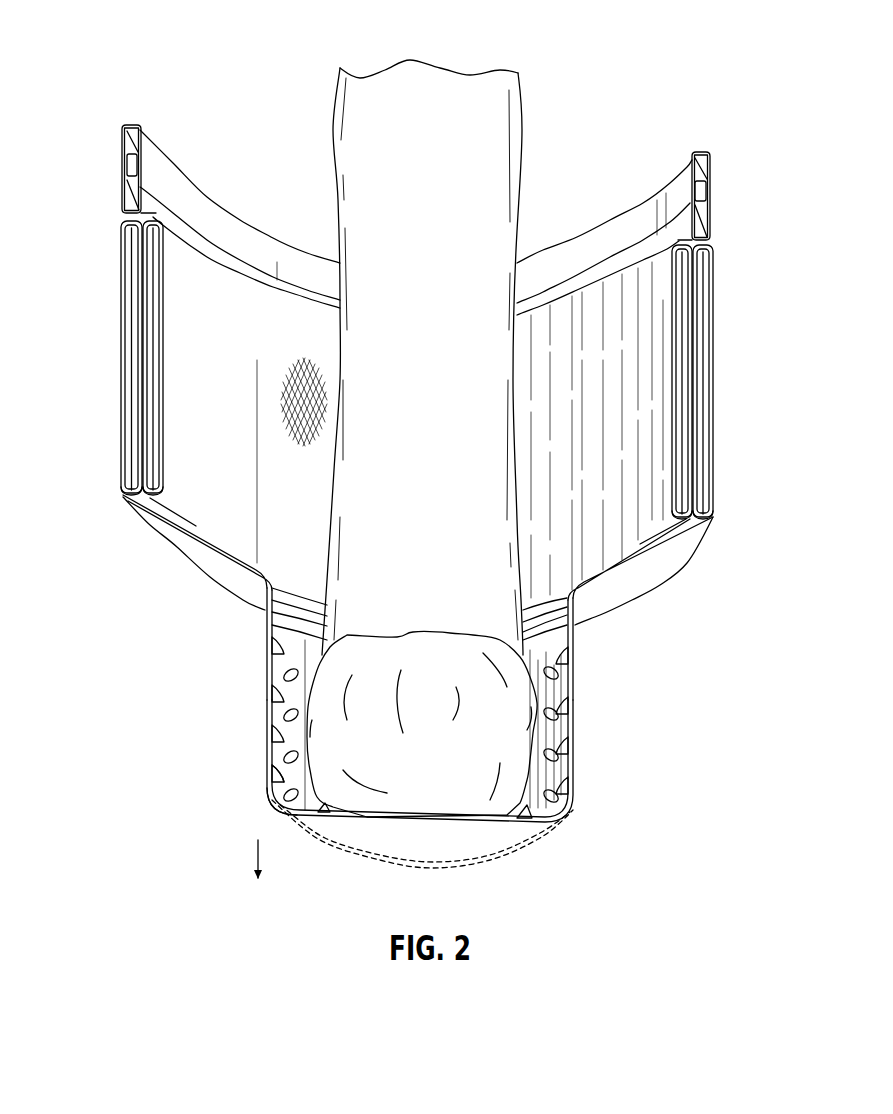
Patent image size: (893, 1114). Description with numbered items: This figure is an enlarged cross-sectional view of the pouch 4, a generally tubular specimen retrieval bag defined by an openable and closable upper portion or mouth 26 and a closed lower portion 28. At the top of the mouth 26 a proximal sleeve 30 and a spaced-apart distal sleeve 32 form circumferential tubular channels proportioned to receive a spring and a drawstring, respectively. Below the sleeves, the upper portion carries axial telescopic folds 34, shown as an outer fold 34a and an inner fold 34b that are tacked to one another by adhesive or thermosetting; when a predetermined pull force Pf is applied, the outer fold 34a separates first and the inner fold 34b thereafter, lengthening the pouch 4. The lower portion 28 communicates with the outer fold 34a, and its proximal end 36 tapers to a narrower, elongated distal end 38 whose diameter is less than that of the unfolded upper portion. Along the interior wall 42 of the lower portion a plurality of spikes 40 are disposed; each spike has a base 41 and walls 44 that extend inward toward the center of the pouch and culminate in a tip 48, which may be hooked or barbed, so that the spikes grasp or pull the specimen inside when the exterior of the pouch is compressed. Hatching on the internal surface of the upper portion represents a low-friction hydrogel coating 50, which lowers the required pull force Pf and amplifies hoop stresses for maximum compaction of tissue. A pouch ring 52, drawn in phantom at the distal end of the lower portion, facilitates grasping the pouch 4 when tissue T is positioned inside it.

The pouch 4 is at (228, 78).
The upper portion or mouth 26 is at (608, 178).
The lower portion 28 is at (715, 580).
The proximal sleeve 30 is at (127, 140).
The distal sleeve 32 is at (128, 167).
The telescopic convolutions or folds 34 is at (100, 320).
The outer fold 34a is at (121, 393).
The inner fold 34b is at (127, 505).
The proximal end of lower portion 36 is at (650, 595).
The distal end of lower portion 38 is at (575, 757).
The spikes 40 is at (272, 650).
The base 41 is at (272, 782).
The interior wall 42 is at (272, 768).
The walls 44 is at (272, 633).
The tip 48 is at (568, 645).
The hydrogel coating 50 is at (305, 355).
The pouch ring 52 is at (460, 868).
The tissue / material lump T is at (503, 714).
The pull force Pf is at (235, 859).